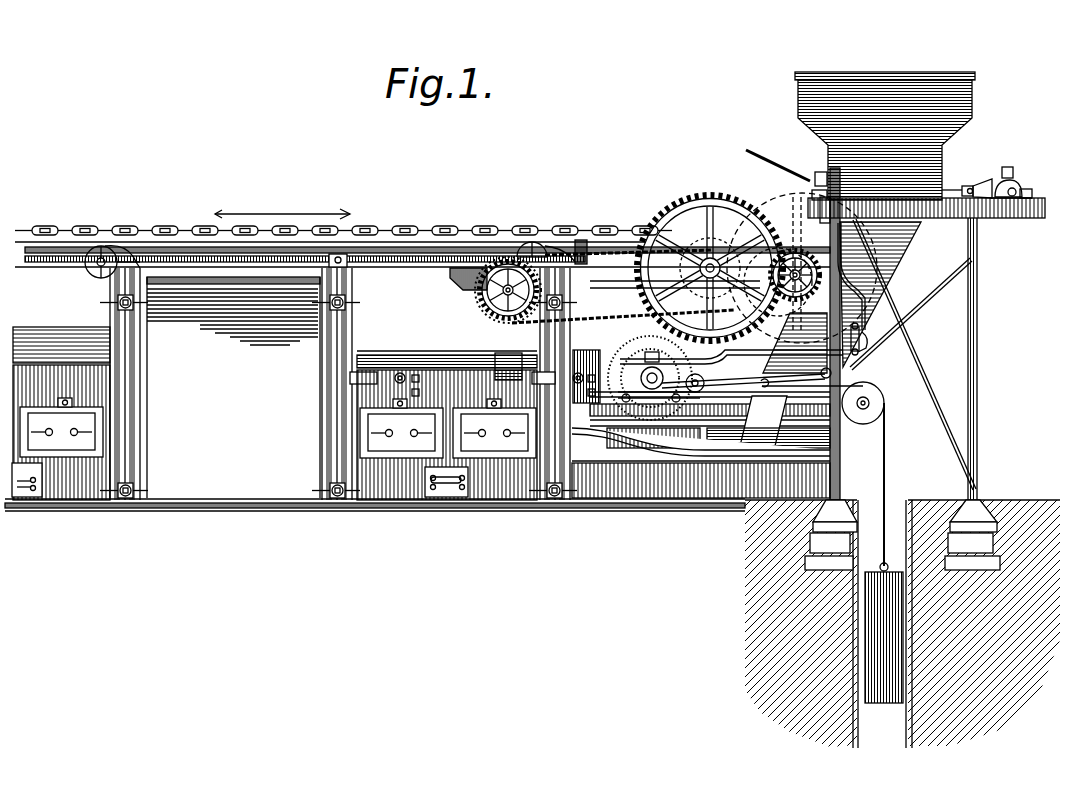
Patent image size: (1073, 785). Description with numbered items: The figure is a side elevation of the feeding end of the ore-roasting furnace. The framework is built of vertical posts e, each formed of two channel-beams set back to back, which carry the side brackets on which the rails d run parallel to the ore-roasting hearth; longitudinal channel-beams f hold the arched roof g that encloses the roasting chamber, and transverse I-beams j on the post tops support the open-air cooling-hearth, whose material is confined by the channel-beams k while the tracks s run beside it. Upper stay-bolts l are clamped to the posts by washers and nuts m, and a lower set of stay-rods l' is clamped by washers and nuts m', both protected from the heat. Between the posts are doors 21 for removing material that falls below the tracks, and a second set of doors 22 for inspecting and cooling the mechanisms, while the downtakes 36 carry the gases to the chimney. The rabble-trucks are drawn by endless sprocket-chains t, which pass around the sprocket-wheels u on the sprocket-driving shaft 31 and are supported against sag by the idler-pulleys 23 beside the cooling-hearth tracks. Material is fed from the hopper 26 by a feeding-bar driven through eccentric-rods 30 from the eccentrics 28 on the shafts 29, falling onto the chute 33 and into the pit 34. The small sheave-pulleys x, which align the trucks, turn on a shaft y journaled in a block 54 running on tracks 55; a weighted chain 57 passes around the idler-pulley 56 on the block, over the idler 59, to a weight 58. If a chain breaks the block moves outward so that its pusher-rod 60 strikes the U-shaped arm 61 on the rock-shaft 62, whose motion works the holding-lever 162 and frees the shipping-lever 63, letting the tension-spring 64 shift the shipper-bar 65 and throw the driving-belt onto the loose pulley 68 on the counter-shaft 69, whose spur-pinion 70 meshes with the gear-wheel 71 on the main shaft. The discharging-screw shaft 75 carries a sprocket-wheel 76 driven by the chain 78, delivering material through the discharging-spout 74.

The doors 21 is at (22, 480).
The second set of doors 22 is at (278, 428).
The idler-pulleys 23 is at (95, 272).
The hopper 26 is at (863, 93).
The eccentrics 28 is at (1012, 176).
The shafts 29 is at (1024, 192).
The eccentric-rods 30 is at (953, 187).
The sprocket-driving shaft 31 is at (705, 262).
The chute 33 is at (893, 235).
The pit 34 is at (762, 437).
The downtakes 36 is at (190, 292).
The block 54 is at (680, 390).
The tracks 55 is at (748, 398).
The idler-pulley 56 is at (705, 382).
The weighted chain 57 is at (833, 387).
The weight 58 is at (884, 703).
The idler 59 is at (870, 396).
The pusher-rod 60 is at (762, 348).
The U-shaped arm 61 is at (858, 353).
The rock-shaft 62 is at (875, 337).
The shipping-lever 63 is at (868, 297).
The tension-spring 64 is at (838, 197).
The shipper-bar 65 is at (816, 177).
The loose pulley 68 is at (778, 195).
The counter-shaft 69 is at (792, 253).
The spur-pinion 70 is at (797, 270).
The gear-wheel 71 is at (676, 240).
The discharging-spout 74 is at (497, 355).
The shaft 75 is at (482, 308).
The sprocket-wheel 76 is at (477, 288).
The chain 78 is at (592, 320).
The holding-lever 162 is at (920, 310).
The endless sprocket-chains t is at (55, 226).
The tracks s is at (148, 252).
The channel-beams k is at (410, 262).
The vertical posts e is at (113, 342).
The washers and nuts m is at (333, 305).
The washers and nuts m' is at (375, 516).
The stay-bolts l is at (376, 311).
The stay-rods l' is at (349, 497).
The I-beams j is at (373, 283).
The arched roof g is at (57, 337).
The longitudinal supporting channel-beams f is at (100, 385).
The sprocket-wheels u is at (711, 238).
The small sheave-pulleys x is at (632, 345).
The shaft y is at (625, 363).
The rails d is at (690, 458).